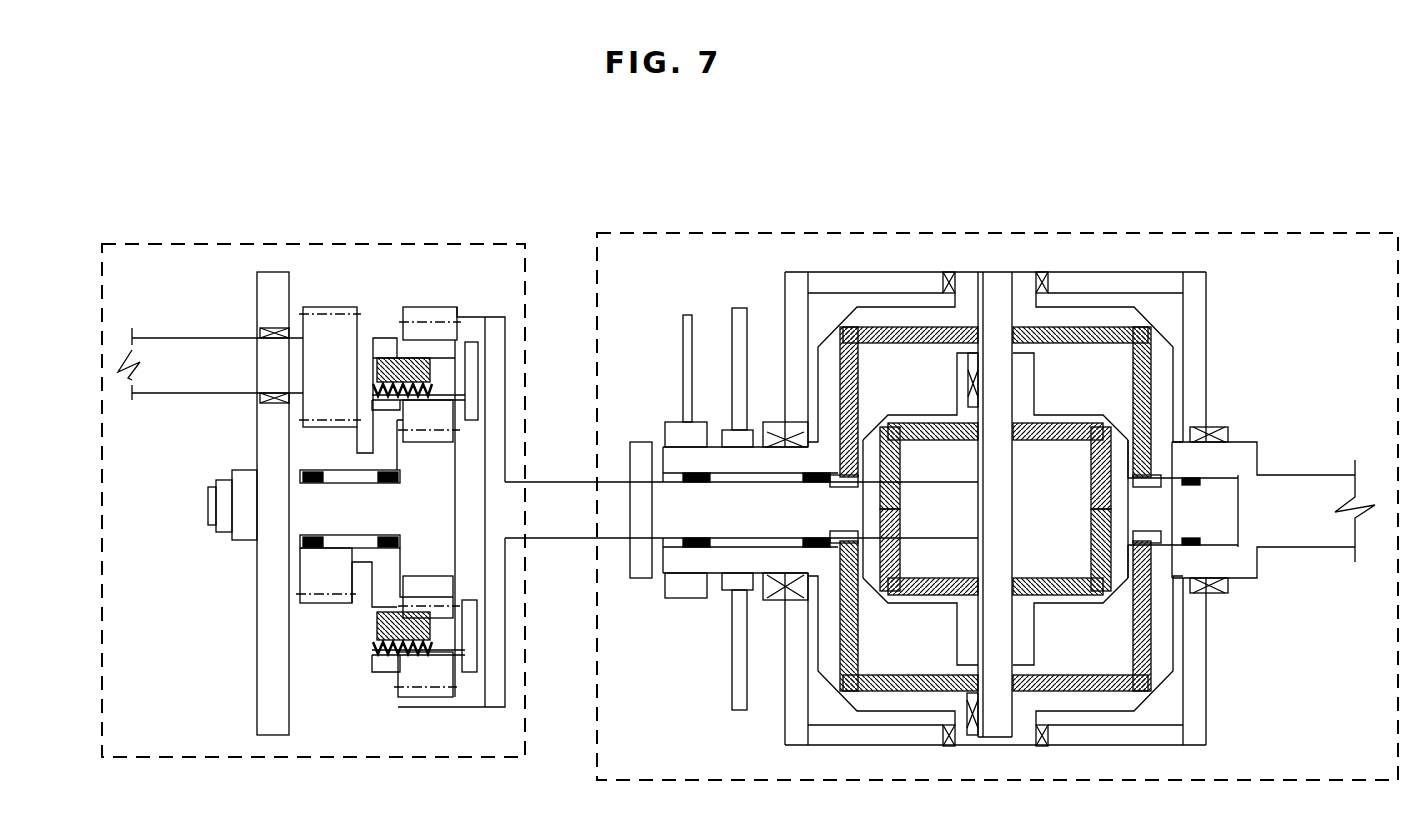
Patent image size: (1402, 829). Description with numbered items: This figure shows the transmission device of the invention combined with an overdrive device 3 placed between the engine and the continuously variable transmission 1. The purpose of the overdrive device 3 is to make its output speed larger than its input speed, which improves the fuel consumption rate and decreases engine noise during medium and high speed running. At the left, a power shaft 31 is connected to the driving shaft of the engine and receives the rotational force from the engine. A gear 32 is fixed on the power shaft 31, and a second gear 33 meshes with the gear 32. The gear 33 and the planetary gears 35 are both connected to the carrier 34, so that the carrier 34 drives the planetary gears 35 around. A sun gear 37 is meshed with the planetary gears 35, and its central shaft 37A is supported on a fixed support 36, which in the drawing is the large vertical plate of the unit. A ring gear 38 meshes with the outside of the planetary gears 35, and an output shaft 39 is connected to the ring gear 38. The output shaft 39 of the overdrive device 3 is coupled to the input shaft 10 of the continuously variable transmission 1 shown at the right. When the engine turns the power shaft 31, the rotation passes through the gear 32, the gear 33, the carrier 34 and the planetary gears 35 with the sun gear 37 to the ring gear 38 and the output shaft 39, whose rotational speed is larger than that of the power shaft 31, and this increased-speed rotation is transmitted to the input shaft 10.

The continuously variable transmission 1 is at (690, 233).
The overdrive device 3 is at (172, 245).
The input shaft 10 is at (607, 515).
The power shaft 31 is at (180, 350).
The gear 32 is at (330, 305).
The gear 33 is at (315, 605).
The carrier 34 is at (375, 605).
The planetary gears 35 is at (412, 345).
The fixed support 36 is at (262, 684).
The sun gear 37 is at (435, 550).
The central shaft 37A is at (277, 512).
The ring gear 38 is at (432, 310).
The output shaft 39 is at (512, 505).